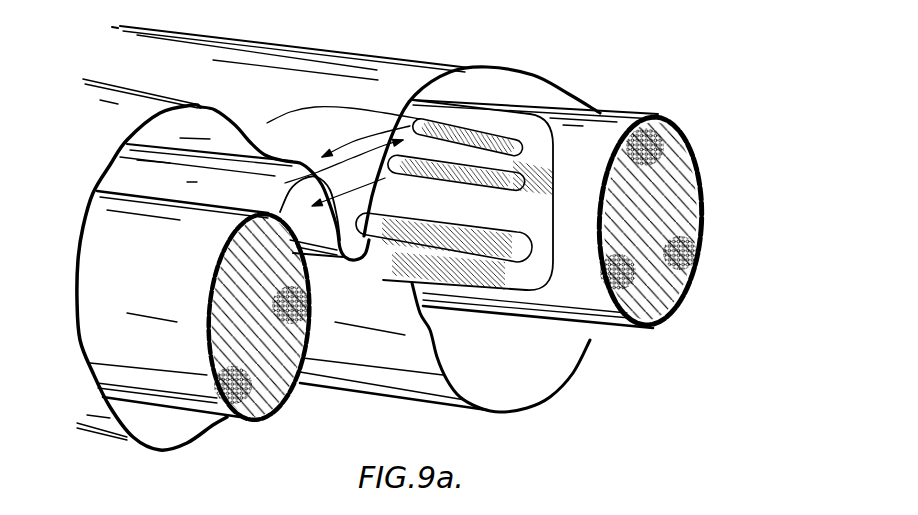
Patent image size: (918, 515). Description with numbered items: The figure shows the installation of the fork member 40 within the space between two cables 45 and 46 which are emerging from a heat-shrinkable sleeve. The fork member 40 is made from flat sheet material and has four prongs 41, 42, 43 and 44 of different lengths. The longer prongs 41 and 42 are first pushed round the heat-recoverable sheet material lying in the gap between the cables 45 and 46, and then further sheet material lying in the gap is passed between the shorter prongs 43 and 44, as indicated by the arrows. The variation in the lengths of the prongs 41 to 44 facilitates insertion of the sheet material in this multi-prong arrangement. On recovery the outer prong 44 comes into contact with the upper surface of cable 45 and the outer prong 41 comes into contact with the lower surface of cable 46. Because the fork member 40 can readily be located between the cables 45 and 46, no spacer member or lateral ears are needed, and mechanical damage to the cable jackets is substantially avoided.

The fork member 40 is at (532, 146).
The prong 41 is at (380, 267).
The prong 42 is at (377, 222).
The prong 43 is at (406, 164).
The prong 44 is at (425, 128).
The cable 45 is at (273, 373).
The cable 46 is at (665, 272).